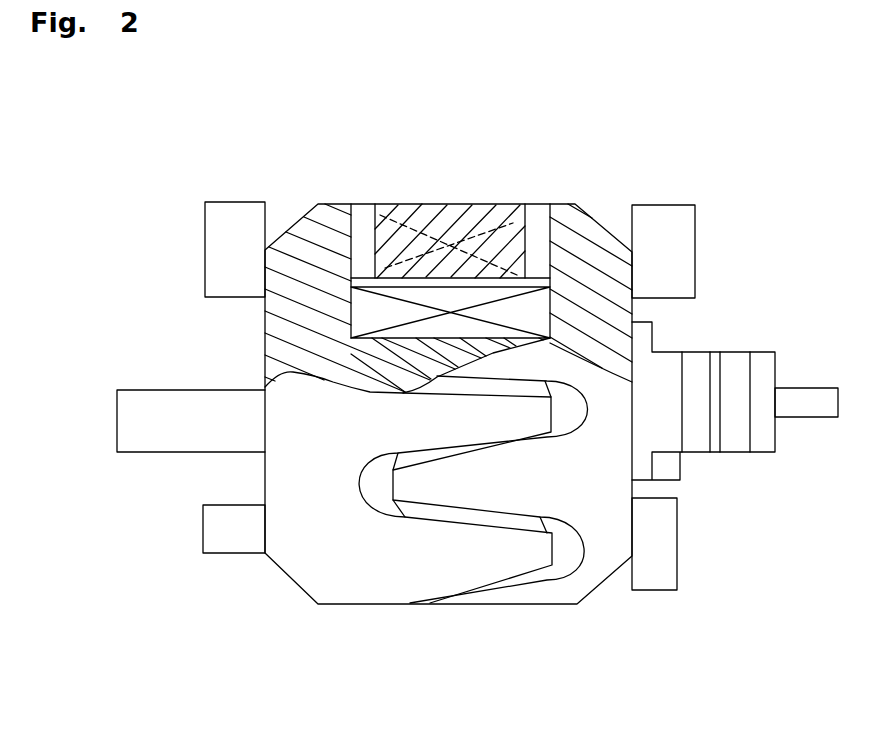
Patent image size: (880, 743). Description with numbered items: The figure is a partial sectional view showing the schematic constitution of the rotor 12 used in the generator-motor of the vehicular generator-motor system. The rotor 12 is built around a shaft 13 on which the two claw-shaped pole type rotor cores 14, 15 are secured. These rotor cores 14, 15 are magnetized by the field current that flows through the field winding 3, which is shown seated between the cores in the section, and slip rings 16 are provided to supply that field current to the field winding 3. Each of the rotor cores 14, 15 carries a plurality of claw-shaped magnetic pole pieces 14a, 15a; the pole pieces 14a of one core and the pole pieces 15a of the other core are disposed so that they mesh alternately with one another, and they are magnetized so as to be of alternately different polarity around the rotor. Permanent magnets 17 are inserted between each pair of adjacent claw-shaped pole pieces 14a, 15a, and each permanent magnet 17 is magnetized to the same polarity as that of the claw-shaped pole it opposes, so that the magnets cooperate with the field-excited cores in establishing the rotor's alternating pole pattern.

The field winding 3 is at (457, 245).
The rotor 12 is at (285, 585).
The shaft 13 is at (146, 455).
The rotor core 14 is at (312, 230).
The claw-shaped magnetic pole piece 14a is at (440, 417).
The rotor core 15 is at (577, 218).
The claw-shaped magnetic pole piece 15a is at (523, 362).
The slip ring 16 is at (722, 352).
The permanent magnet 17 is at (443, 225).